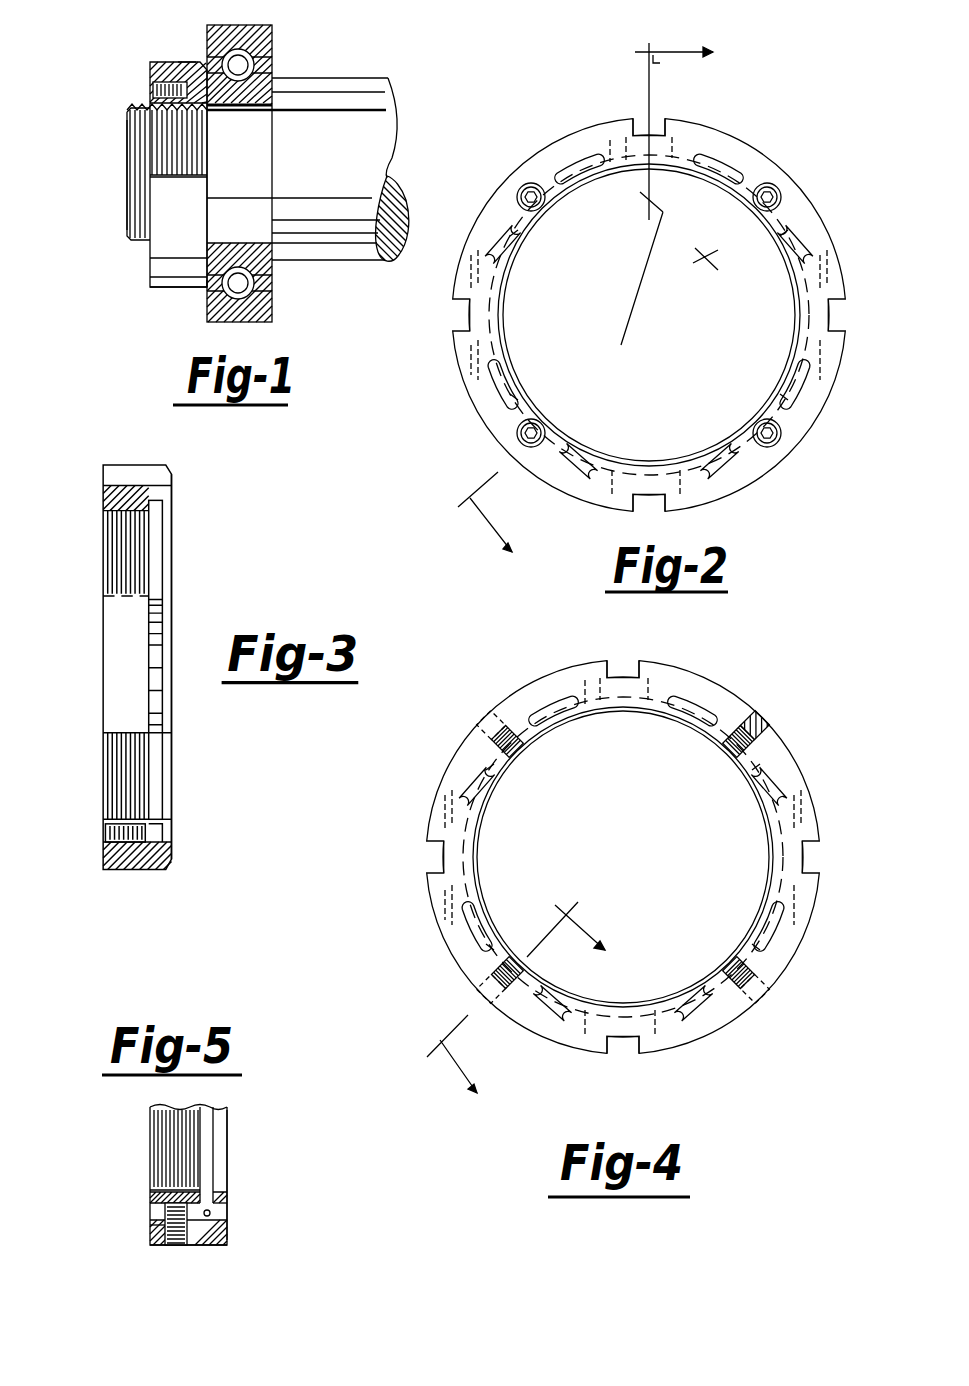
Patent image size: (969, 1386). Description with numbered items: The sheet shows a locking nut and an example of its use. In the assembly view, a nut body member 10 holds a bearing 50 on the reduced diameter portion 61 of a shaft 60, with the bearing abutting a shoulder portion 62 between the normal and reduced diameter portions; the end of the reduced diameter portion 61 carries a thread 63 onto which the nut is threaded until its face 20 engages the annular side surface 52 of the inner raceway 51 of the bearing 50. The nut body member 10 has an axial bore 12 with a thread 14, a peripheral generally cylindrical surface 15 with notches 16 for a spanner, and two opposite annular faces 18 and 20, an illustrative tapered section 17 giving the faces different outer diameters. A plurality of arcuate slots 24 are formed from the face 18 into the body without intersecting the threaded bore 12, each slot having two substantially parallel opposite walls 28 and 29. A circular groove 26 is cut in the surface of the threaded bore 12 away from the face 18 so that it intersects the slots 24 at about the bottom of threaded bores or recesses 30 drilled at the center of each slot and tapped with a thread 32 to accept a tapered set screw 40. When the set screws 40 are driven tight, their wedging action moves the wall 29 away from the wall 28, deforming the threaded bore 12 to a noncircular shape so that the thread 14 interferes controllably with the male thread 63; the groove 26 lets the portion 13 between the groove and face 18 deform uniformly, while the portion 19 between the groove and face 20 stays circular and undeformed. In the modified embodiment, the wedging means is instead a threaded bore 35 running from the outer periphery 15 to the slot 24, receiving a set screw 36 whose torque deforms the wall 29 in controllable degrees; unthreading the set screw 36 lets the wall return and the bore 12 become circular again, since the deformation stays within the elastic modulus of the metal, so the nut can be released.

In FIG. 1, the nut body member 10 is at (263, 181).
In FIG. 2, the nut body member 10 is at (630, 305).
In FIG. 3, the nut body member 10 is at (138, 682).
In FIG. 4, the nut body member 10 is at (615, 866).
In FIG. 5, the nut body member 10 is at (200, 1209).
In FIG. 1, the axial bore 12 is at (140, 130).
In FIG. 2, the axial bore 12 is at (503, 305).
In FIG. 3, the axial bore 12 is at (103, 600).
In FIG. 4, the axial bore 12 is at (480, 810).
In FIG. 5, the axial bore 12 is at (170, 1118).
In FIG. 3, the portion of the threaded bore 13 is at (117, 768).
In FIG. 5, the portion of the threaded bore 13 is at (158, 1198).
In FIG. 1, the thread 14 is at (207, 140).
In FIG. 2, the thread 14 is at (510, 343).
In FIG. 3, the thread 14 is at (110, 502).
In FIG. 4, the thread 14 is at (477, 840).
In FIG. 5, the thread 14 is at (165, 1180).
In FIG. 1, the peripheral cylindrical surface 15 is at (178, 174).
In FIG. 2, the peripheral cylindrical surface 15 is at (462, 387).
In FIG. 3, the peripheral cylindrical surface 15 is at (127, 807).
In FIG. 4, the peripheral cylindrical surface 15 is at (797, 763).
In FIG. 5, the peripheral cylindrical surface 15 is at (200, 1250).
In FIG. 2, the notches 16 is at (658, 115).
In FIG. 3, the notches 16 is at (133, 470).
In FIG. 4, the notches 16 is at (623, 673).
In FIG. 1, the tapered section 17 is at (205, 288).
In FIG. 3, the tapered section 17 is at (164, 874).
In FIG. 5, the tapered section 17 is at (222, 1238).
In FIG. 1, the annular face 18 is at (150, 282).
In FIG. 2, the annular face 18 is at (463, 355).
In FIG. 3, the annular face 18 is at (100, 490).
In FIG. 4, the annular face 18 is at (440, 903).
In FIG. 5, the annular face 18 is at (157, 1227).
In FIG. 3, the portion 19 is at (152, 773).
In FIG. 5, the portion 19 is at (222, 1195).
In FIG. 1, the annular face 20 is at (207, 192).
In FIG. 3, the annular face 20 is at (155, 567).
In FIG. 5, the annular face 20 is at (227, 1127).
In FIG. 2, the slots 24 is at (573, 160).
In FIG. 3, the slots 24 is at (108, 698).
In FIG. 4, the slots 24 is at (540, 710).
In FIG. 5, the slots 24 is at (223, 1217).
In FIG. 2, the circular groove 26 is at (630, 157).
In FIG. 3, the circular groove 26 is at (135, 505).
In FIG. 4, the circular groove 26 is at (610, 700).
In FIG. 5, the circular groove 26 is at (207, 1180).
In FIG. 2, the wall 28 is at (495, 250).
In FIG. 4, the wall 28 is at (718, 710).
In FIG. 5, the wall 28 is at (200, 1240).
In FIG. 2, the wall 29 is at (507, 237).
In FIG. 4, the wall 29 is at (487, 767).
In FIG. 5, the wall 29 is at (153, 1208).
In FIG. 1, the threaded bore or recess 30 is at (187, 61).
In FIG. 3, the threaded bore or recess 30 is at (104, 875).
In FIG. 3, the thread 32 is at (98, 770).
In FIG. 4, the threaded bore 35 is at (753, 720).
In FIG. 5, the threaded bore 35 is at (165, 1228).
In FIG. 4, the set screw 36 is at (490, 720).
In FIG. 5, the set screw 36 is at (178, 1247).
In FIG. 1, the tapered set screw 40 is at (153, 88).
In FIG. 2, the tapered set screw 40 is at (533, 190).
In FIG. 3, the tapered set screw 40 is at (91, 838).
In FIG. 1, the bearing 50 is at (272, 38).
In FIG. 1, the inner raceway 51 is at (258, 80).
In FIG. 1, the annular side surface 52 is at (272, 252).
In FIG. 1, the shaft 60 is at (387, 117).
In FIG. 1, the reduced diameter portion 61 is at (272, 170).
In FIG. 1, the shoulder portion 62 is at (262, 110).
In FIG. 1, the thread 63 is at (127, 233).